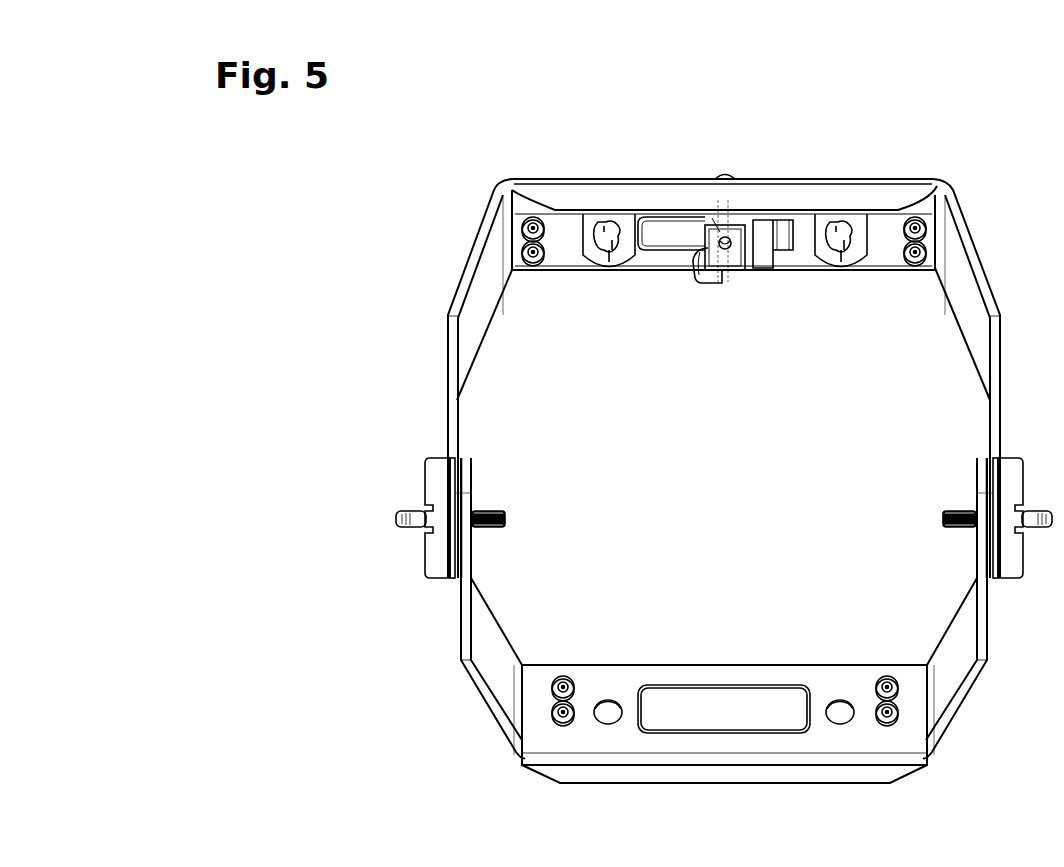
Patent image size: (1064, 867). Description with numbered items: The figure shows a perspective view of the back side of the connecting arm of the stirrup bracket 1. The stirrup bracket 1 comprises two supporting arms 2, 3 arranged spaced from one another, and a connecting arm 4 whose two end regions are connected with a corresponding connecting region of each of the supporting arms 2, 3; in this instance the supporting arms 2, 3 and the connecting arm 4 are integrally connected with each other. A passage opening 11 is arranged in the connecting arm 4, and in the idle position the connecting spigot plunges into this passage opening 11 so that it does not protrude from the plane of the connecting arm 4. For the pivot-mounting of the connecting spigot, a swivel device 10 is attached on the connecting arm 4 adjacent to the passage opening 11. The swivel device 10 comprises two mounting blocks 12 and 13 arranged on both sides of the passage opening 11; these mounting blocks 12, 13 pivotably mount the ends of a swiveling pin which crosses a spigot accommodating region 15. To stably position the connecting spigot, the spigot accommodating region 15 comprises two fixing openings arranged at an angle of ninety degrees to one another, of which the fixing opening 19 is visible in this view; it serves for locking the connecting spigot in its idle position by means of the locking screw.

The stirrup bracket 1 is at (926, 128).
The supporting arm 2 is at (483, 258).
The supporting arm 3 is at (950, 260).
The connecting arm 4 is at (824, 162).
The swivel device 10 is at (766, 282).
The passage opening 11 is at (660, 234).
The mounting block 12 is at (733, 222).
The mounting block 13 is at (740, 268).
The spigot accommodating region 15 is at (718, 232).
The fixing opening 19 is at (720, 258).